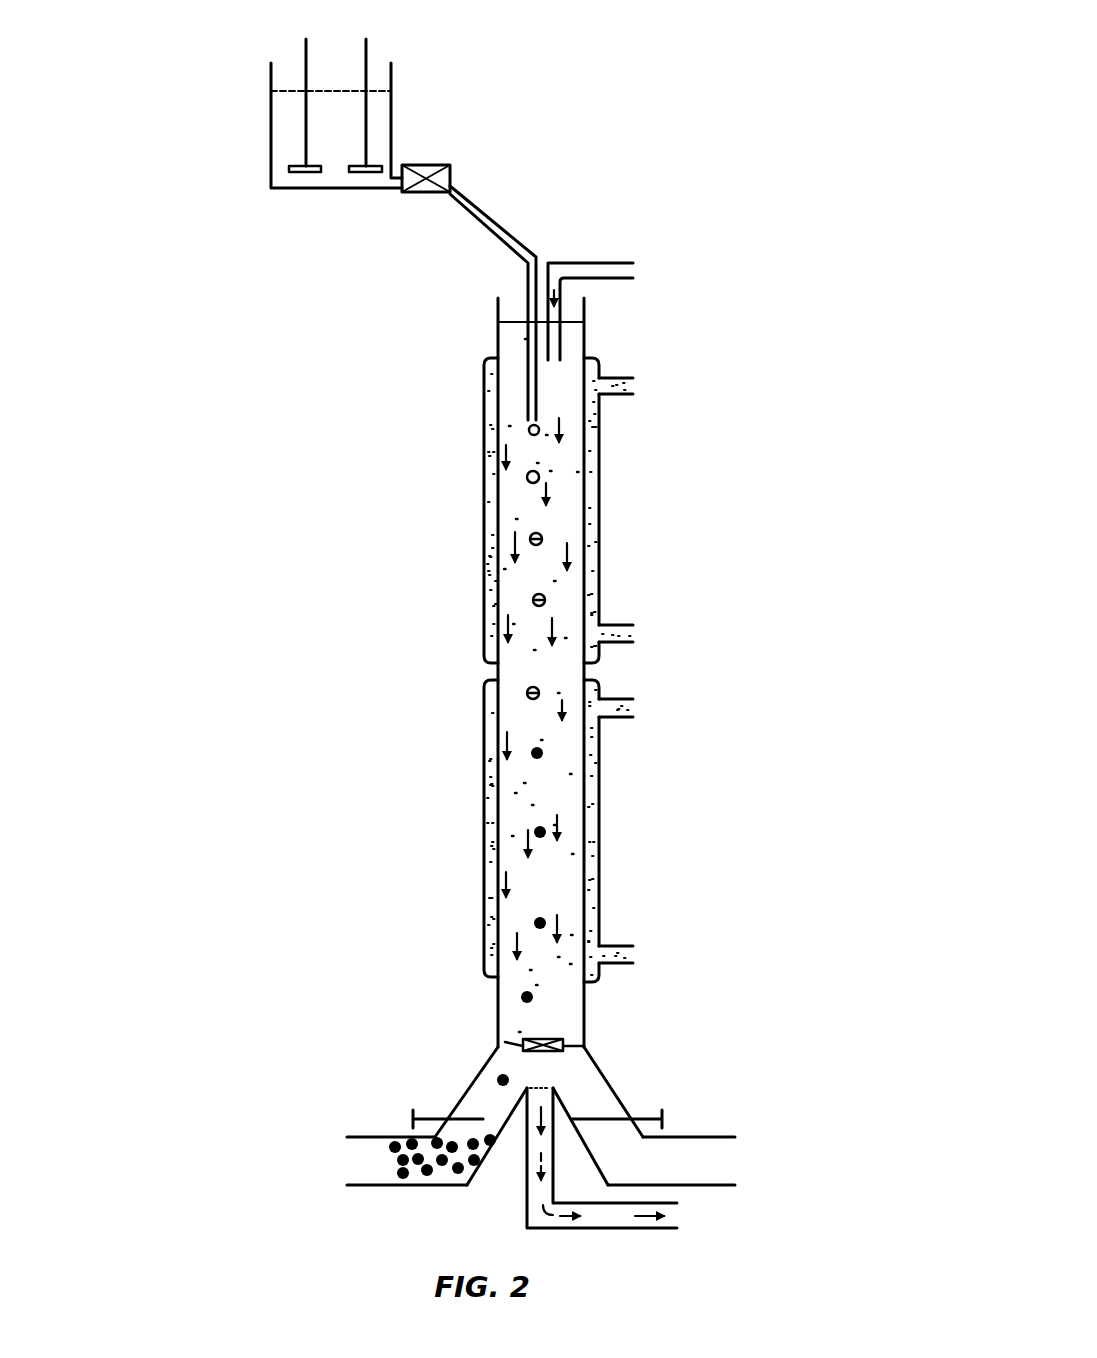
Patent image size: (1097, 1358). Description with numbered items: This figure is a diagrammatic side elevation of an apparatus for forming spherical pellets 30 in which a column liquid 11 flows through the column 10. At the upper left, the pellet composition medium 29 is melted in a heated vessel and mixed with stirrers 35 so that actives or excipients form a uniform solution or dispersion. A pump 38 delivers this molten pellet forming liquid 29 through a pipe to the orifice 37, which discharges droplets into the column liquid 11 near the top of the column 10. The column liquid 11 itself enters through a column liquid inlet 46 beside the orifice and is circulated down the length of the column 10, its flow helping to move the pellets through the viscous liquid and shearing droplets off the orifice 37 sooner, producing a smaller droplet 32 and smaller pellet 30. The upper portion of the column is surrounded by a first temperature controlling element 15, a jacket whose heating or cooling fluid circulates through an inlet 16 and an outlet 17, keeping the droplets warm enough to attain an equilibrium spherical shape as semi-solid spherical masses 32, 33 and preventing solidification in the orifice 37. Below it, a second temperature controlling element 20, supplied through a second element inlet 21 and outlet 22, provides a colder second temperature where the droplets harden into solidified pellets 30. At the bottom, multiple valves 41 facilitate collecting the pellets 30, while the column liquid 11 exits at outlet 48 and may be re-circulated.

The column 10 is at (498, 333).
The column liquid 11 is at (563, 519).
The first temperature controlling element 15 is at (490, 418).
The inlet 16 is at (633, 385).
The outlet 17 is at (633, 632).
The second temperature controlling element 20 is at (487, 770).
The second element inlet 21 is at (633, 708).
The outlet 22 is at (633, 953).
The pellet composition medium 29 is at (292, 117).
The spherical pellets 30 is at (535, 830).
The semi-solid spherical mass 32 is at (527, 477).
The semi-solid spherical mass 33 is at (527, 690).
The stirrers 35 is at (366, 50).
The orifice 37 is at (540, 410).
The pump 38 is at (428, 165).
The valves 41 is at (553, 1035).
The column liquid inlet 46 is at (633, 270).
The outlet 48 is at (683, 1216).